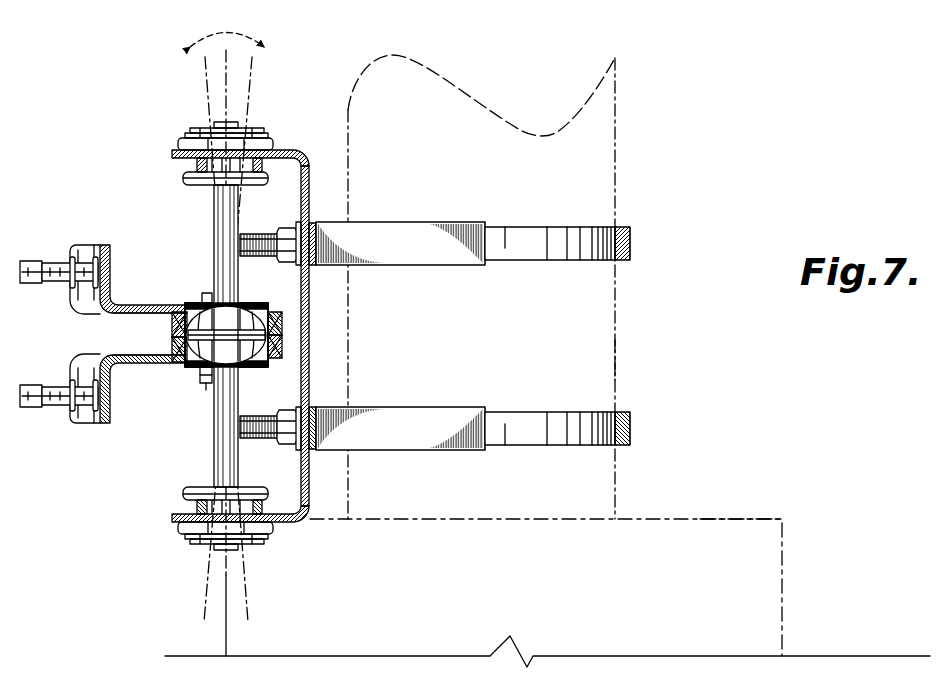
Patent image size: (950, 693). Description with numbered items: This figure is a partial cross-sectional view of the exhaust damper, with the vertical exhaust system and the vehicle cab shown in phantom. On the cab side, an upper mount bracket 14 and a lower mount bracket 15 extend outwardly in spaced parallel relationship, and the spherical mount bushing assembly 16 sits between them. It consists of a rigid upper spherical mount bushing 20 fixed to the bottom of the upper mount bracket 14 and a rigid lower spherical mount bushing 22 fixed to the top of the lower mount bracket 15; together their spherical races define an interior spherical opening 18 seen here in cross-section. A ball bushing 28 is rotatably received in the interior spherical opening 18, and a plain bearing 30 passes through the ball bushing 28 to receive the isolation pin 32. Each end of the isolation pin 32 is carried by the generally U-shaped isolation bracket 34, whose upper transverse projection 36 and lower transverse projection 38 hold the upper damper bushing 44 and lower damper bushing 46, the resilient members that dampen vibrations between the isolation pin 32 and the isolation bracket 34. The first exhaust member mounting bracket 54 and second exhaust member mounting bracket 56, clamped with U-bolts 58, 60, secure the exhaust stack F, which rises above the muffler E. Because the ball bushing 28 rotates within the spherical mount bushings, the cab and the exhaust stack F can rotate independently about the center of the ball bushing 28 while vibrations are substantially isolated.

The upper mount bracket 14 is at (72, 252).
The lower mount bracket 15 is at (82, 372).
The spherical mount bushing assembly 16 is at (177, 387).
The interior spherical opening 18 is at (175, 358).
The upper spherical mount bushing 20 is at (175, 325).
The lower spherical mount bushing 22 is at (175, 340).
The ball bushing 28 is at (198, 300).
The plain bearing 30 is at (250, 305).
The isolation pin 32 is at (213, 188).
The isolation bracket 34 is at (311, 495).
The upper transverse projection 36 is at (288, 150).
The lower transverse projection 38 is at (287, 522).
The upper damper bushing 44 is at (176, 131).
The lower damper bushing 46 is at (181, 539).
The first exhaust member mounting bracket 54 is at (418, 233).
The second exhaust member mounting bracket 56 is at (420, 410).
The U-bolt 58 is at (630, 240).
The U-bolt 60 is at (630, 416).
The exhaust stack F is at (615, 362).
The muffler E is at (737, 519).